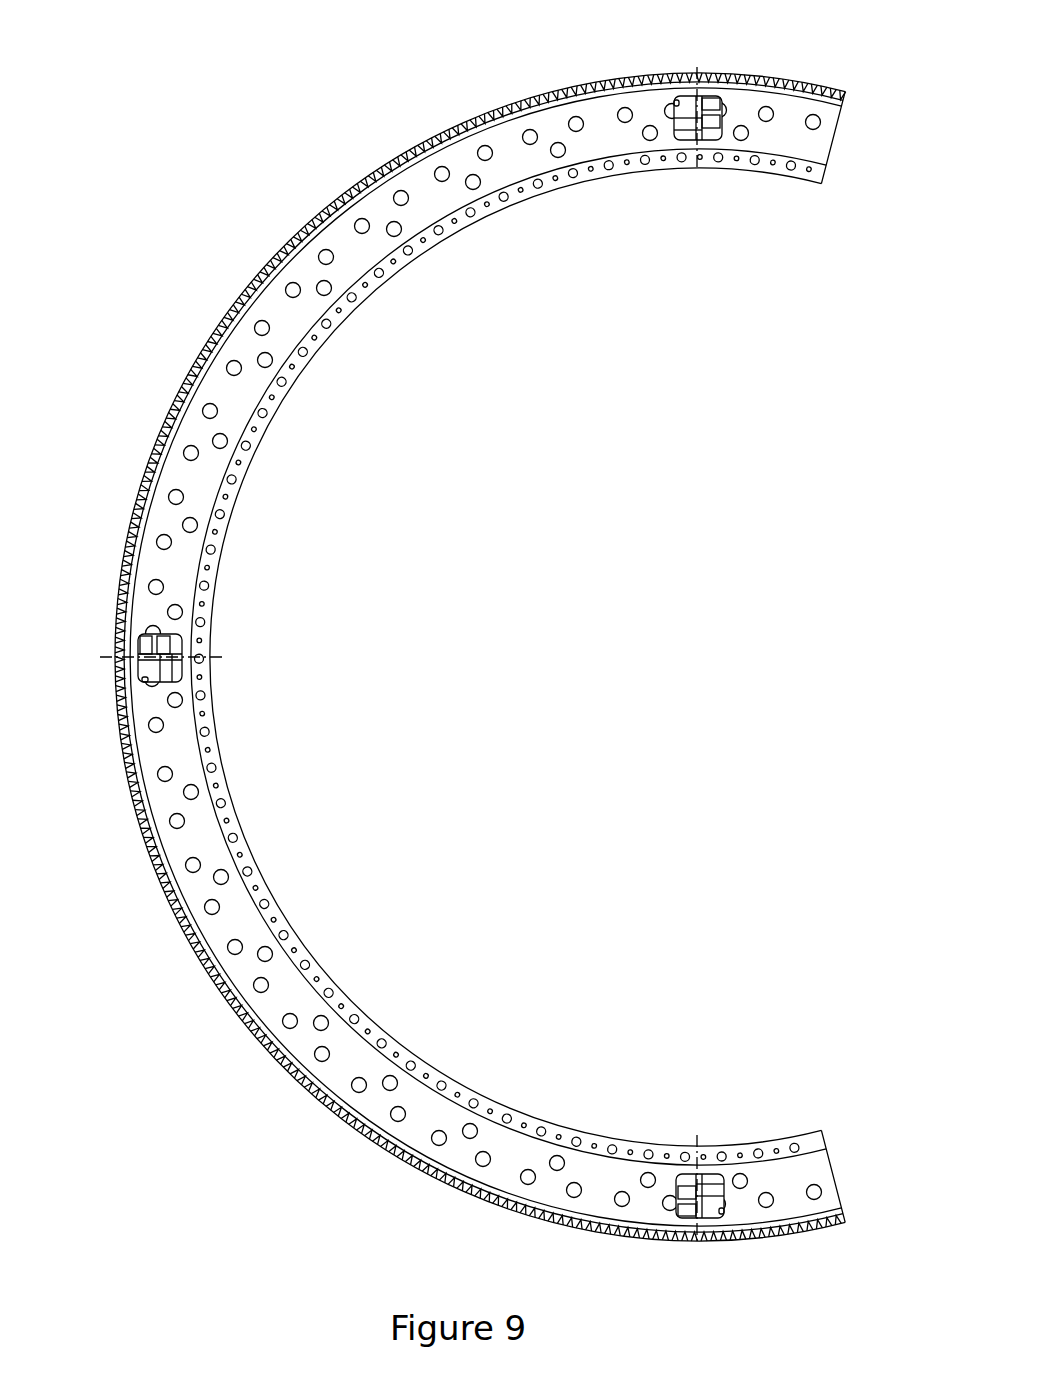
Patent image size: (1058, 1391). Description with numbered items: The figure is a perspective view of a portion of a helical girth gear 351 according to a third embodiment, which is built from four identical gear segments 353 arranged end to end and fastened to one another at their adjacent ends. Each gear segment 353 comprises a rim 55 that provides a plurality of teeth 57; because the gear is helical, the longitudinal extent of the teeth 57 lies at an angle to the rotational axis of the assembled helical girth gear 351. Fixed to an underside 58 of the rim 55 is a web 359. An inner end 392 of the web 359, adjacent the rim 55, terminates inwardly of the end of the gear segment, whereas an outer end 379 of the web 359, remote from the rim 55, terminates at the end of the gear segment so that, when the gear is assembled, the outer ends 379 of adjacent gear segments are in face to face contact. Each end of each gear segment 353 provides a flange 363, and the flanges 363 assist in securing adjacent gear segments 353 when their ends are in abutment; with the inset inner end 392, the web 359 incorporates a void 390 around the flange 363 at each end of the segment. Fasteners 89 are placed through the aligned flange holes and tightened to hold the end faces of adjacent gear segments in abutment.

The helical girth gear 351 is at (281, 162).
The teeth 57 is at (742, 86).
The rim 55 is at (836, 112).
The underside 58 is at (497, 128).
The web 359 is at (352, 268).
The gear segment 353 is at (792, 180).
The void 390 is at (698, 142).
The flange 363 is at (690, 138).
The inner end 392 is at (145, 638).
The fasteners 89 is at (185, 645).
The outer end 379 is at (188, 650).